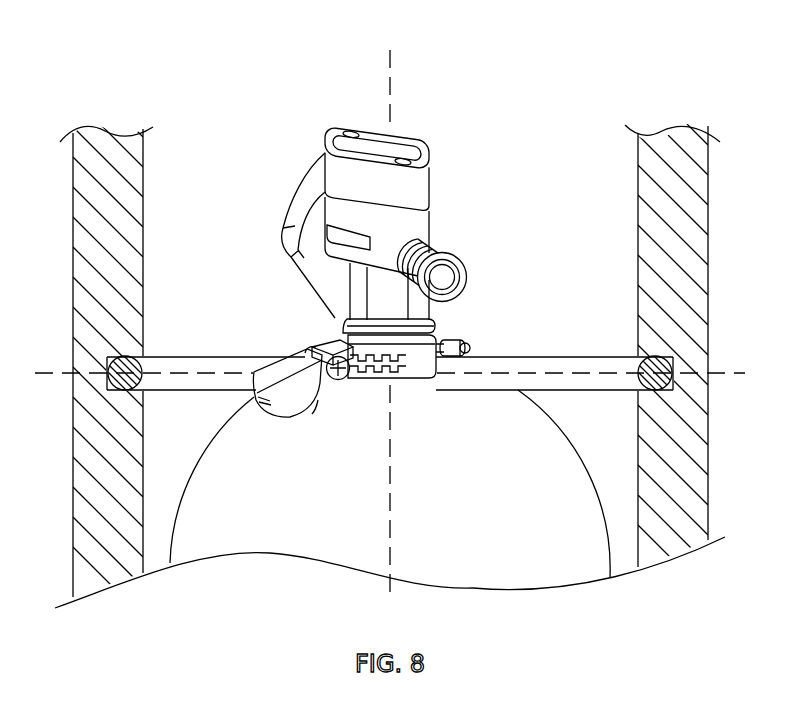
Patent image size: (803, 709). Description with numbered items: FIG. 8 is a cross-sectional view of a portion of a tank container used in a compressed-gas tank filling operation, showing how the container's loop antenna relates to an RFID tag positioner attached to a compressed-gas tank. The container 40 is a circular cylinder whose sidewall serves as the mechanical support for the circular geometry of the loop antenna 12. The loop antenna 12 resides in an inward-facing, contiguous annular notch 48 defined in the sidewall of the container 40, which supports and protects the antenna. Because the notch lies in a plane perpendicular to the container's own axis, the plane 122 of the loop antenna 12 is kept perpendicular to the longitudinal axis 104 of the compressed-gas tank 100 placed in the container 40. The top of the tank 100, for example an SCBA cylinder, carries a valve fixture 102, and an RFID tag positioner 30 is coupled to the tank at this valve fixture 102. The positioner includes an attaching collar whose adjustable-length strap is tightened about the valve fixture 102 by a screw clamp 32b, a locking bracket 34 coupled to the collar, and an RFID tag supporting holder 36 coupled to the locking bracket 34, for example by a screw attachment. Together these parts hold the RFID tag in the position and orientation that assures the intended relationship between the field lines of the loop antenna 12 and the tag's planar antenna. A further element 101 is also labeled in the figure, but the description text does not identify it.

The loop antenna 12 is at (236, 360).
The plane of loop antenna 122 is at (188, 373).
The RFID tag positioner 30 is at (318, 338).
The screw clamp 32b is at (456, 338).
The locking bracket 34 is at (345, 381).
The RFID tag supporting holder 36 is at (284, 370).
The container 40 is at (73, 327).
The annular notch 48 is at (155, 357).
The compressed-gas tank 100 is at (580, 461).
The tank neck 101 is at (317, 430).
The valve fixture 102 is at (292, 153).
The longitudinal axis 104 is at (390, 65).